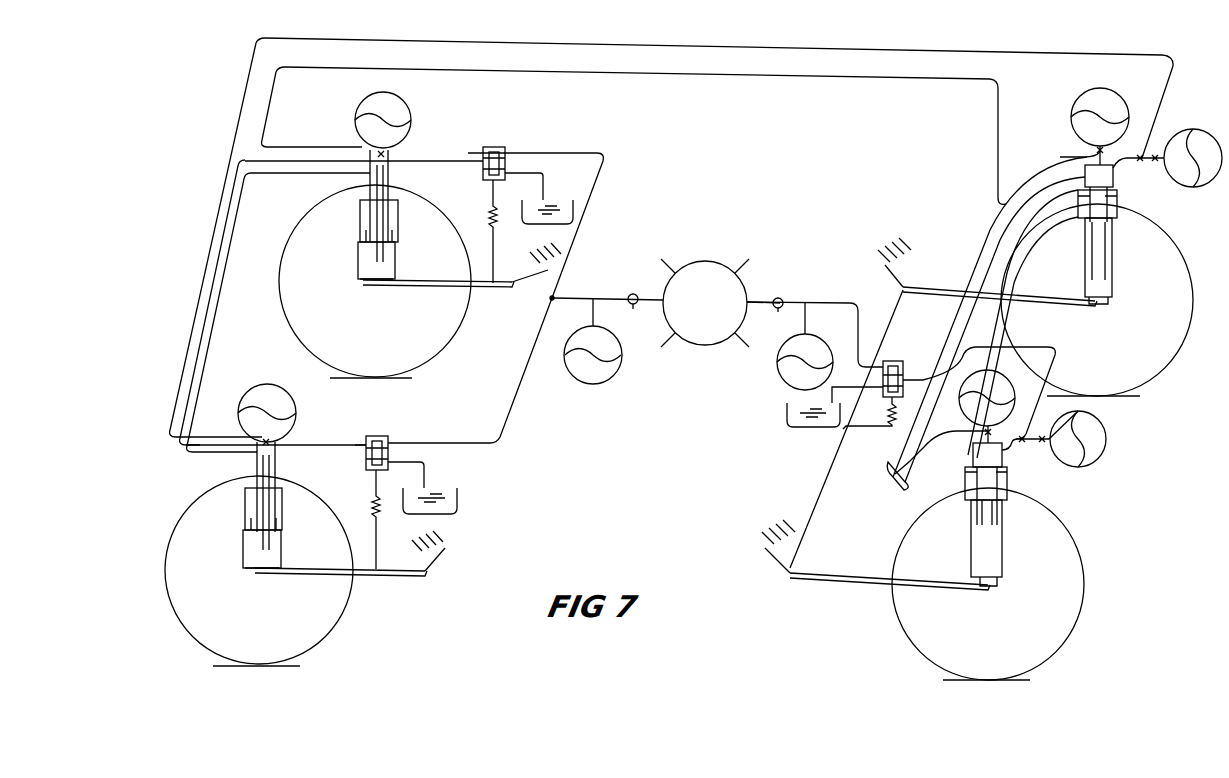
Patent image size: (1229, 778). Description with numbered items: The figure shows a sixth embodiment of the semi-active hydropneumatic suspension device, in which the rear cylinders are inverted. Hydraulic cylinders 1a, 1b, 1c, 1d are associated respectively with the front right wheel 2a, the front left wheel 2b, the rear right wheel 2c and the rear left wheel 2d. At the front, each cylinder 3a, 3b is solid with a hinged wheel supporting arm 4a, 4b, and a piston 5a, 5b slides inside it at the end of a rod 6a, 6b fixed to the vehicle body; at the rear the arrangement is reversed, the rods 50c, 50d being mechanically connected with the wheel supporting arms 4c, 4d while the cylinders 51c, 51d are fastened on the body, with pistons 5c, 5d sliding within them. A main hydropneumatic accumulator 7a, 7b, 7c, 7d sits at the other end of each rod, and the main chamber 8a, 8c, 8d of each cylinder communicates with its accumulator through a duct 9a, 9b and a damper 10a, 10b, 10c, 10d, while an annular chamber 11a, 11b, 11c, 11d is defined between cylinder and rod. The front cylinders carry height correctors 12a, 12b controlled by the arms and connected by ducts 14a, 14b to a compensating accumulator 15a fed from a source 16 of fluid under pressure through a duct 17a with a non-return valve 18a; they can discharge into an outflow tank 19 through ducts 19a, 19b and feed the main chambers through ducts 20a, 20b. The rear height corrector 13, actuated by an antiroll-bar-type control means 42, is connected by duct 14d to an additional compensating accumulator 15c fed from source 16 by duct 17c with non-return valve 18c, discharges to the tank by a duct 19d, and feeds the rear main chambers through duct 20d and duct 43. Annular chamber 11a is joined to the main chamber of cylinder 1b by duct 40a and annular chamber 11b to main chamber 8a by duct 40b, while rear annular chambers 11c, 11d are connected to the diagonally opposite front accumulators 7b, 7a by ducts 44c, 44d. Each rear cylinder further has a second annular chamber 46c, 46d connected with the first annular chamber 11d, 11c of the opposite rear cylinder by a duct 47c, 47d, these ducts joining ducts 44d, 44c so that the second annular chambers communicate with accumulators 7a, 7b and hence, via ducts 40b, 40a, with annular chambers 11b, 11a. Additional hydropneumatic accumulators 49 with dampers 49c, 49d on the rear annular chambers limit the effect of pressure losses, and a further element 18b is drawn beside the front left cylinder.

The hydraulic cylinder 1a is at (386, 211).
The hydraulic cylinder 1b is at (260, 502).
The hydraulic cylinder 1c is at (1115, 204).
The hydraulic cylinder 1d is at (987, 517).
The front right wheel 2a is at (440, 358).
The front left wheel 2b is at (338, 627).
The rear right wheel 2c is at (1140, 392).
The rear left wheel 2d is at (1078, 612).
The cylinder 3a is at (395, 255).
The cylinder 3b is at (281, 548).
The hinged wheel supporting arm 4a is at (498, 300).
The hinged wheel supporting arm 4b is at (395, 580).
The hinged wheel supporting arm 4c is at (932, 285).
The hinged wheel supporting arm 4d is at (836, 590).
The piston 5a is at (358, 258).
The piston 5b is at (243, 550).
The piston 5c is at (1113, 192).
The piston 5d is at (1000, 472).
The rod 6a is at (402, 183).
The rod 6b is at (278, 470).
The main hydropneumatic accumulator 7a is at (412, 106).
The main hydropneumatic accumulator 7b is at (272, 376).
The main hydropneumatic accumulator 7c is at (1127, 102).
The main hydropneumatic accumulator 7d is at (1012, 372).
The main chamber 8a is at (350, 300).
The main chamber 8c is at (1115, 165).
The main chamber 8d is at (1002, 452).
The duct 9a is at (398, 215).
The duct 9b is at (283, 512).
The damper 10a is at (396, 155).
The damper 10b is at (283, 444).
The damper 10c is at (1090, 150).
The damper 10d is at (950, 432).
The annular chamber 11a is at (360, 215).
The annular chamber 11b is at (245, 505).
The annular chamber 11c is at (1078, 203).
The annular chamber 11d is at (965, 485).
The height corrector 12a is at (520, 135).
The height corrector 12b is at (394, 428).
The height corrector 13 is at (904, 355).
The duct 14a is at (603, 170).
The duct 14b is at (508, 420).
The duct 14d is at (856, 303).
The hydropneumatic compensating accumulator 15a is at (597, 392).
The additional hydropneumatic compensating accumulator 15c is at (776, 394).
The source of fluid under pressure 16 is at (708, 261).
The duct 17a is at (630, 285).
The duct 17c is at (786, 288).
The non-return valve 18a is at (633, 309).
The branch line 18b is at (243, 562).
The non-return valve 18c is at (776, 310).
The outflow tank 19 is at (527, 223).
The duct 19a is at (545, 185).
The duct 19b is at (430, 470).
The reservoir 19d is at (790, 430).
The duct 20a is at (468, 148).
The duct 20b is at (352, 440).
The duct 20d is at (940, 360).
The duct 40a is at (220, 287).
The duct 40b is at (222, 215).
The control means of the antiroll bar type 42 is at (814, 508).
The duct 43 is at (880, 478).
The duct 44c is at (308, 40).
The duct 44d is at (798, 77).
The second annular chamber 46c is at (1085, 262).
The second annular chamber 46d is at (971, 530).
The duct 47c is at (995, 322).
The duct 47d is at (1000, 222).
The accumulator 49 is at (1200, 130).
The accumulator line 49c is at (1157, 155).
The damper 49d is at (1078, 411).
The rod 50c is at (1112, 298).
The rod 50d is at (1000, 586).
The cylinder 51c is at (1112, 262).
The cylinder 51d is at (1002, 522).